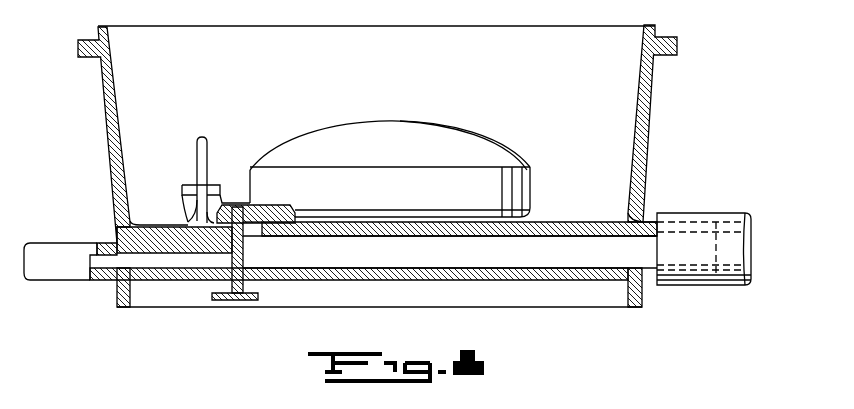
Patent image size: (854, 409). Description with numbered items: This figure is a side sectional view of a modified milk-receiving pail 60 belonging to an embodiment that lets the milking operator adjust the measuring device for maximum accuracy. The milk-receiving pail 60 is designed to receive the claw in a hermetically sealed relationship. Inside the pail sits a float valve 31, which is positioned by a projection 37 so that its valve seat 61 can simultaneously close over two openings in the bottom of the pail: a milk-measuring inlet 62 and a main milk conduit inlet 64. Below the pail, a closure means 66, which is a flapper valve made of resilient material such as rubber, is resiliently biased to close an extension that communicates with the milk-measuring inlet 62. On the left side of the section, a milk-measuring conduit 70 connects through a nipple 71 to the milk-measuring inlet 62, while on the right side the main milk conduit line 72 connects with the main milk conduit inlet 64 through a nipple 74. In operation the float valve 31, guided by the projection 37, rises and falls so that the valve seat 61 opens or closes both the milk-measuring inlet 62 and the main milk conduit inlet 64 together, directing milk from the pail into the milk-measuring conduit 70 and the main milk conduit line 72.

The milk-receiving pail 60 is at (603, 23).
The float valve 31 is at (402, 157).
The projection 37 is at (209, 142).
The valve seat 61 is at (275, 216).
The milk-measuring inlet 62 is at (183, 262).
The main milk conduit inlet 64 is at (400, 260).
The closure means 66 is at (235, 300).
The milk-measuring conduit 70 is at (74, 267).
The nipple 71 is at (105, 280).
The main milk conduit line 72 is at (742, 241).
The nipple 74 is at (651, 222).